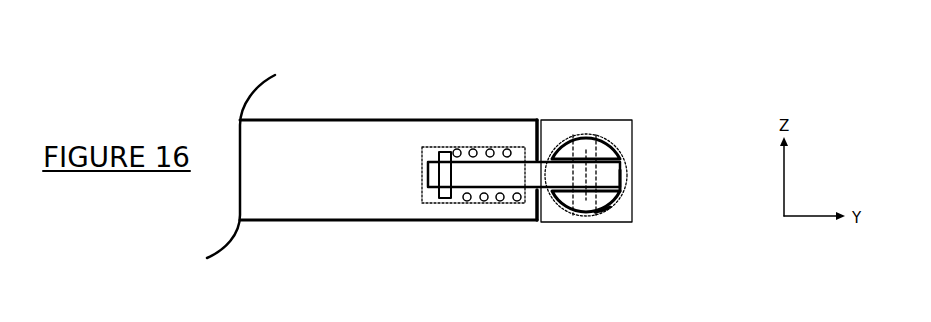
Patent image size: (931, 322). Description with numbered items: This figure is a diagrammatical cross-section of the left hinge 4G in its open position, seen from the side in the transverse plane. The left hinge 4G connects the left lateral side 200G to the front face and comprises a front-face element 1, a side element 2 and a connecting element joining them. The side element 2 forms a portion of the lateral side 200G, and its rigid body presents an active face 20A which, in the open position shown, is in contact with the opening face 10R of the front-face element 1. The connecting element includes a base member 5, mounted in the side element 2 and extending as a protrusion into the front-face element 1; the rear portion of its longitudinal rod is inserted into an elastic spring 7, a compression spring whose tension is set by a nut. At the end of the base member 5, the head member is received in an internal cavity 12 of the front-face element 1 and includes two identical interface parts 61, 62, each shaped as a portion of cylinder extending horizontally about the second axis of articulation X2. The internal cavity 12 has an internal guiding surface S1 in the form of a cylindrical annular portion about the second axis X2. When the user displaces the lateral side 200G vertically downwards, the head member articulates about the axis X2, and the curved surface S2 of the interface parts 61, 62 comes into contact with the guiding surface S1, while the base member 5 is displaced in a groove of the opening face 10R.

The side element 2 is at (415, 135).
The left lateral side 200G is at (372, 163).
The active face 20A is at (542, 128).
The opening face 10R is at (537, 221).
The base member 5 is at (517, 190).
The elastic spring 7 is at (465, 198).
The left hinge 4G is at (616, 143).
The front-face element 1 is at (627, 148).
The internal cavity 12 is at (598, 137).
The interface part 61 is at (567, 147).
The interface part 62 is at (585, 200).
The second axis of articulation X2 is at (586, 174).
The internal guiding surface S1 is at (622, 188).
The curved surface S2 is at (602, 210).